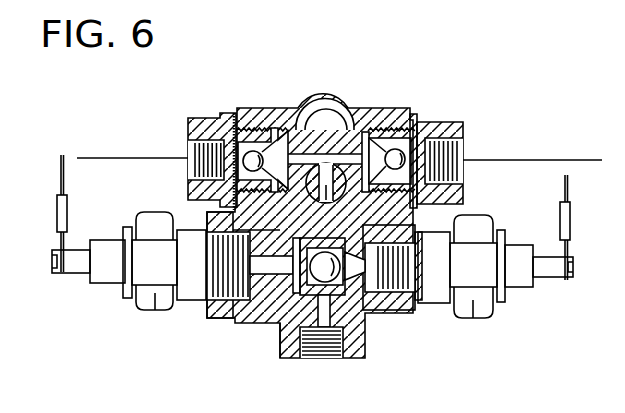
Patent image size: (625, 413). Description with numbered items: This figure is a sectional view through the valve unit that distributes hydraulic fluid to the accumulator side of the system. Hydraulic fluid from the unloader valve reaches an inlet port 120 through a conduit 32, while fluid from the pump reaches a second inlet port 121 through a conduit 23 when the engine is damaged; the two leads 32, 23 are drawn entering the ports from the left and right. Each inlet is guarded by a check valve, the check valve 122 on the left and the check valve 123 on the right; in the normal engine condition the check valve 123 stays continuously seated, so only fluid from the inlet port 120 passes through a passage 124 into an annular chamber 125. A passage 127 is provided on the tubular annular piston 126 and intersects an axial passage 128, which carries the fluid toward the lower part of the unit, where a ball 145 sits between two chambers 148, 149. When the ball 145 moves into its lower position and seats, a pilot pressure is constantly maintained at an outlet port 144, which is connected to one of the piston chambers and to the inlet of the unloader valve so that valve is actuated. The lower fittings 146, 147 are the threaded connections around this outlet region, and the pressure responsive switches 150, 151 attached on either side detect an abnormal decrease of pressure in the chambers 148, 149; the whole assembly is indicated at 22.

The valve assembly 22 is at (348, 233).
The conduit 23 is at (547, 160).
The conduit 32 is at (109, 158).
The inlet port 120 is at (192, 146).
The inlet port 121 is at (463, 158).
The check valve 122 is at (254, 150).
The check valve 123 is at (426, 128).
The passage 124 is at (367, 135).
The annular chamber 125 is at (308, 143).
The tubular annular piston 126 is at (336, 152).
The passage 127 is at (325, 187).
The axial passage 128 is at (335, 198).
The outlet port 144 is at (335, 352).
The ball 145 is at (313, 350).
The lower left coupling nut 146 is at (278, 305).
The boss 147 is at (365, 345).
The chamber 148 is at (291, 242).
The chamber 149 is at (373, 307).
The pressure responsive switch 150 is at (153, 310).
The pressure responsive switch 151 is at (479, 318).